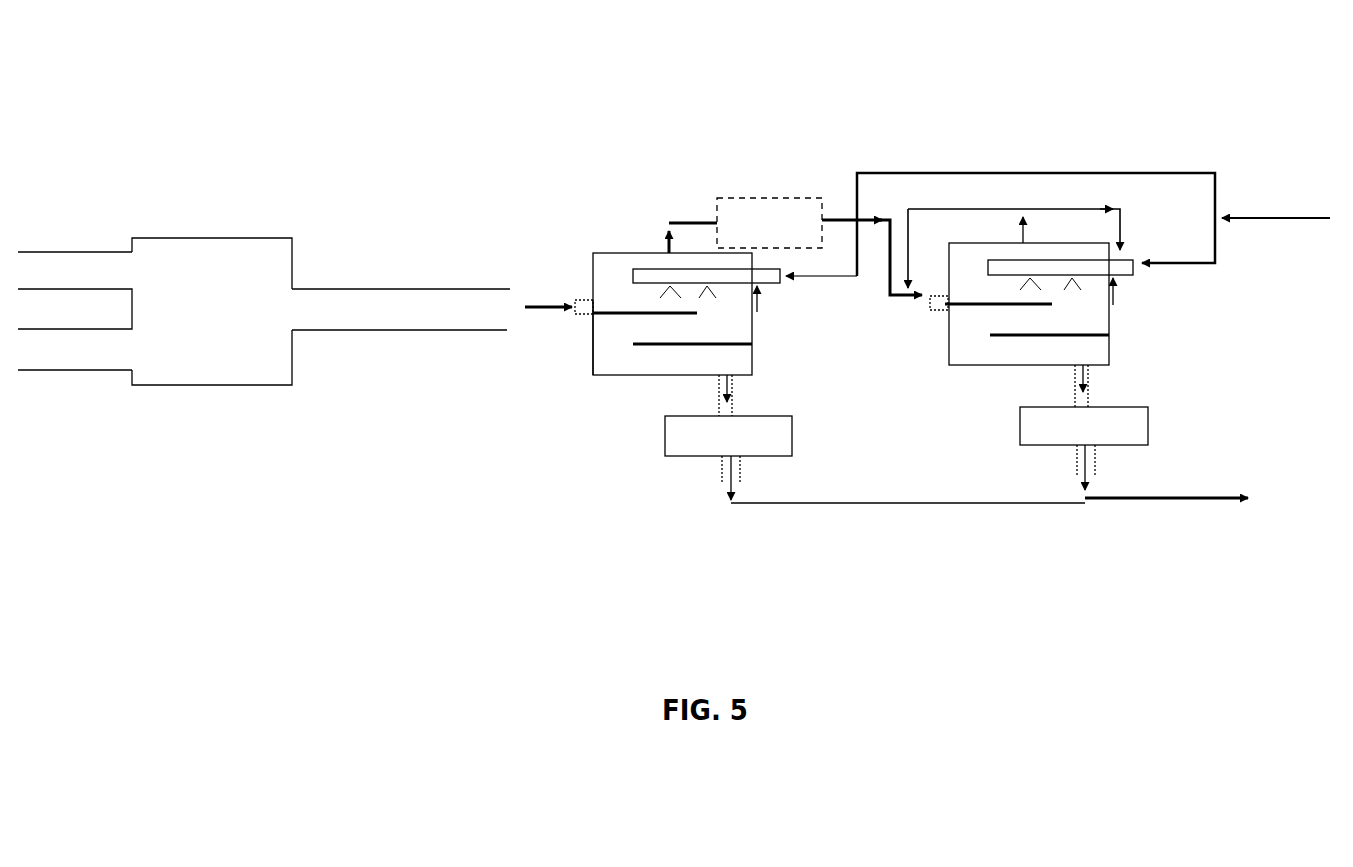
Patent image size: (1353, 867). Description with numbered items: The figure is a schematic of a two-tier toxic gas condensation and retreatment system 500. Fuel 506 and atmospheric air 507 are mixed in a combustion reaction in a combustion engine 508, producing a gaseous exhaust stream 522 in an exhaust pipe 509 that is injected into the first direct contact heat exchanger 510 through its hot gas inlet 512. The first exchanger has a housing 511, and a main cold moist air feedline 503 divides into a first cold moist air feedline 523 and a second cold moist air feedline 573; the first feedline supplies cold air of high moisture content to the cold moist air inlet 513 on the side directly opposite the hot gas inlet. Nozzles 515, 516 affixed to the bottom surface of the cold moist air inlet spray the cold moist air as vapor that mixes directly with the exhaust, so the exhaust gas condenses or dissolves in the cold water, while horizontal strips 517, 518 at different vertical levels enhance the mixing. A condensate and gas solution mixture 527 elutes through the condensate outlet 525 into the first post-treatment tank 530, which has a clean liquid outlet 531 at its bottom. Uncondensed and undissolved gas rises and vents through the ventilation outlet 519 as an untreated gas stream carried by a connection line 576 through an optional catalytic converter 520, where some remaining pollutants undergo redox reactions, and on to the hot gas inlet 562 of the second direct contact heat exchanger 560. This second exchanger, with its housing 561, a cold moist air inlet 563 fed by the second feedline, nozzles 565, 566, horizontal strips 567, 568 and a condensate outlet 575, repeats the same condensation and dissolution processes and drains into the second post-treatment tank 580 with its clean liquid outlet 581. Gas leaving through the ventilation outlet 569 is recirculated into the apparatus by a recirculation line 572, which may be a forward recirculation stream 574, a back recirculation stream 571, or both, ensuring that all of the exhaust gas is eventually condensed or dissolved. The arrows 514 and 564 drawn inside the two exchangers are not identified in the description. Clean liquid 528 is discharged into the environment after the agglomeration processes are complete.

The two-tier system 500 is at (858, 92).
The main cold moist air feedline 503 is at (1015, 173).
The fuel 506 is at (57, 267).
The atmospheric air 507 is at (57, 357).
The combustion engine 508 is at (200, 255).
The exhaust pipe 509 is at (408, 298).
The first direct contact heat exchanger 510 is at (618, 267).
The housing 511 is at (613, 380).
The hot gas inlet 512 is at (582, 308).
The cold moist air inlet 513 is at (767, 283).
The gas flow arrow 514 is at (758, 293).
The nozzle 515 is at (667, 286).
The nozzle 516 is at (712, 290).
The horizontal strip 517 is at (618, 313).
The horizontal strip 518 is at (678, 346).
The ventilation outlet 519 is at (663, 252).
The catalytic converter 520 is at (767, 210).
The gaseous exhaust stream 522 is at (545, 312).
The first cold moist air feedline 523 is at (855, 278).
The condensate outlet 525 is at (730, 403).
The condensate and gas solution mixture 527 is at (715, 388).
The clean liquid 528 is at (730, 500).
The first post-treatment tank 530 is at (783, 438).
The clean liquid outlet 531 is at (740, 467).
The second direct contact heat exchanger 560 is at (988, 368).
The housing 561 is at (963, 367).
The hot gas inlet 562 is at (938, 305).
The cold moist air inlet 563 is at (1122, 278).
The gas flow arrow 564 is at (1112, 282).
The nozzle 565 is at (1010, 283).
The nozzle 566 is at (1062, 285).
The horizontal strip 567 is at (975, 307).
The horizontal strip 568 is at (1052, 337).
The ventilation outlet 569 is at (1018, 240).
The back recirculation stream 571 is at (932, 207).
The recirculation line 572 is at (1027, 235).
The second cold moist air feedline 573 is at (1207, 267).
The forward recirculation stream 574 is at (1077, 208).
The condensate outlet 575 is at (1085, 400).
The connection line 576 is at (666, 222).
The second post-treatment tank 580 is at (1142, 420).
The clean liquid outlet 581 is at (1093, 460).